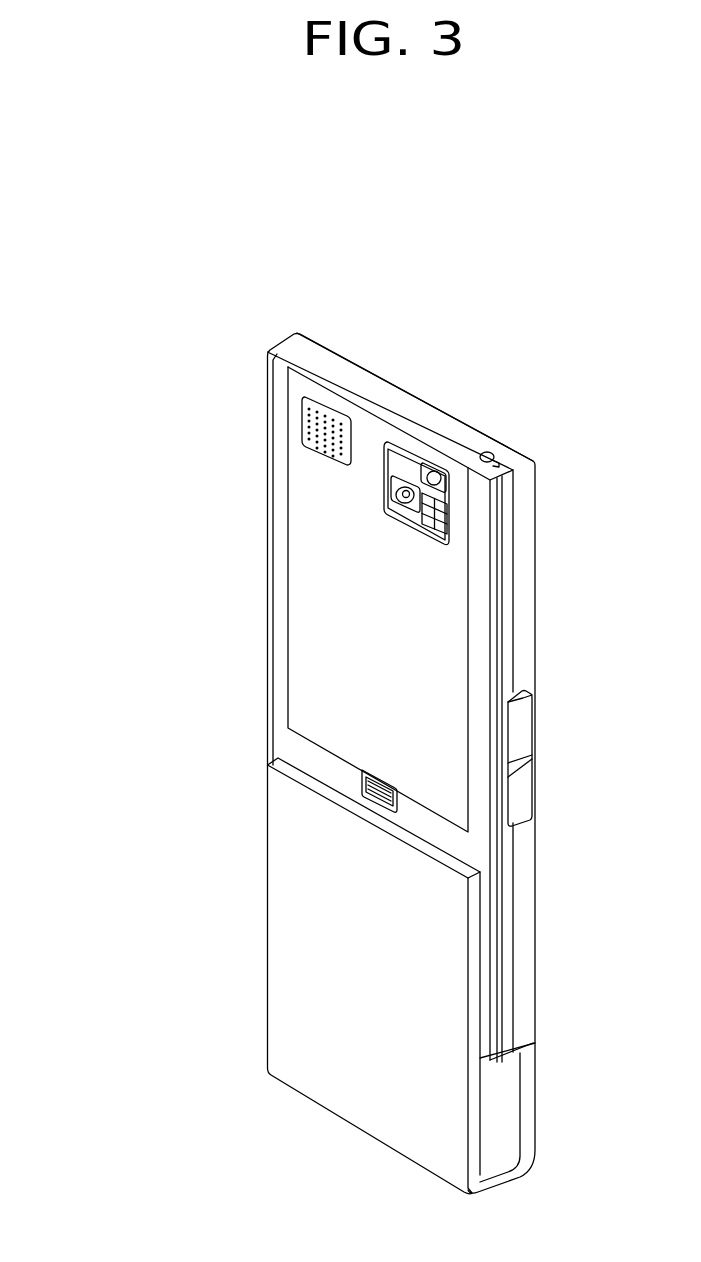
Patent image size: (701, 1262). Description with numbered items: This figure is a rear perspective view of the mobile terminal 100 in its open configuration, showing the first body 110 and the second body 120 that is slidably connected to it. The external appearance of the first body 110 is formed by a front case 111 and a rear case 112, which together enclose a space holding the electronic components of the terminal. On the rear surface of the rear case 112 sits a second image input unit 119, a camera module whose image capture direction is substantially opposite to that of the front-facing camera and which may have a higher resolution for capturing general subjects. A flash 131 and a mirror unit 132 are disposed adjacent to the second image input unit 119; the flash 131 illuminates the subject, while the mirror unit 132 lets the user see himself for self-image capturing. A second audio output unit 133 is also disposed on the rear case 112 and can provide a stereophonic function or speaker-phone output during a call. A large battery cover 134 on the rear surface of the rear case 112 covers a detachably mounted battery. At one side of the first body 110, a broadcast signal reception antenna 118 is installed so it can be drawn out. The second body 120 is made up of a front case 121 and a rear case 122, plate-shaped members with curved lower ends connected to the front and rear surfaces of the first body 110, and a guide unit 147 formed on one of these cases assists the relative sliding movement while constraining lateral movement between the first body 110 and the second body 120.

The mobile terminal 100 is at (125, 332).
The first body 110 is at (260, 502).
The front case 111 is at (297, 333).
The rear case 112 is at (272, 347).
The broadcast signal reception antenna 118 is at (493, 457).
The second image input unit 119 is at (406, 492).
The flash 131 is at (441, 508).
The mirror unit 132 is at (435, 478).
The second audio output unit 133 is at (300, 420).
The battery cover 134 is at (305, 592).
The second body 120 is at (262, 907).
The front case 121 is at (528, 1098).
The rear case 122 is at (275, 987).
The guide unit 147 is at (507, 1147).